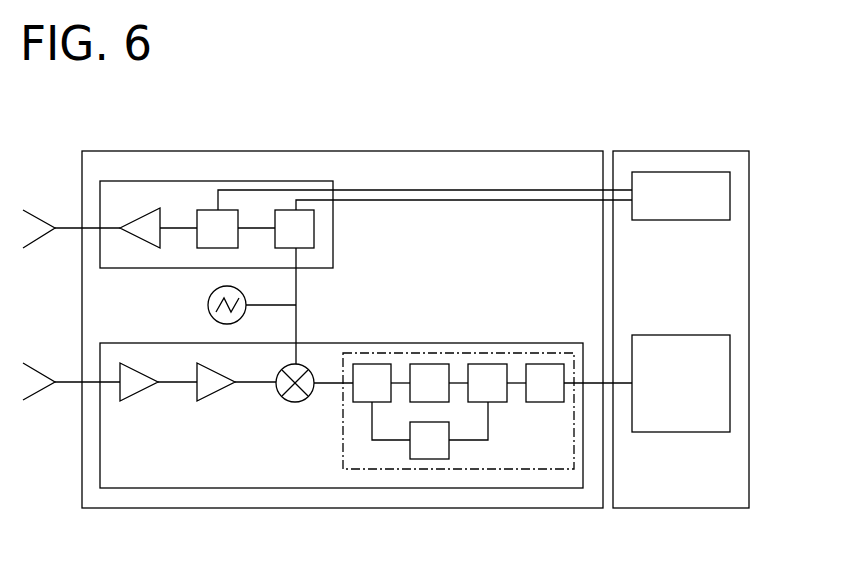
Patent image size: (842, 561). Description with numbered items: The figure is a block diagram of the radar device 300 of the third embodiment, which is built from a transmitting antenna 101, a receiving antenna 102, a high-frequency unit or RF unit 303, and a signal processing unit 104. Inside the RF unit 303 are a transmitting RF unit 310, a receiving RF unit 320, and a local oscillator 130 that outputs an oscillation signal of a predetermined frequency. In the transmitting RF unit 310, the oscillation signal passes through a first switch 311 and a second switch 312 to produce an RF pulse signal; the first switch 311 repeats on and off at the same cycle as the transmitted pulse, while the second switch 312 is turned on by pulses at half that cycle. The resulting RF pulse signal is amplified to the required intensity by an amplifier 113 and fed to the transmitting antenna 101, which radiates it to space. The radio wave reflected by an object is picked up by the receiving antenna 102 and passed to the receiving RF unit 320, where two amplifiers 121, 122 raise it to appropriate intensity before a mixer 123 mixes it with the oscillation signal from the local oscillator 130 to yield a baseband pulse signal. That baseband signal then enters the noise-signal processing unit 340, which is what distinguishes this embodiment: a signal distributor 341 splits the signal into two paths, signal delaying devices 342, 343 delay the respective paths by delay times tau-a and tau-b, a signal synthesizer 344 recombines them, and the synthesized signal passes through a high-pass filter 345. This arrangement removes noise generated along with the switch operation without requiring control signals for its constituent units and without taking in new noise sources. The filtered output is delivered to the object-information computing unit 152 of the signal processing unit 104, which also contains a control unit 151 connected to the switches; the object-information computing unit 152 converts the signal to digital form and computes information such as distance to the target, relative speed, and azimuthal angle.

The radar device 300 is at (262, 112).
The high-frequency unit (RF unit) 303 is at (190, 151).
The signal processing unit 104 is at (678, 151).
The transmitting RF unit 310 is at (296, 181).
The receiving RF unit 320 is at (210, 488).
The transmitting antenna 101 is at (42, 220).
The receiving antenna 102 is at (42, 374).
The amplifier 113 is at (137, 238).
The second switch 312 is at (195, 240).
The first switch 311 is at (314, 228).
The local oscillator 130 is at (208, 305).
The amplifier 121 is at (143, 390).
The amplifier 122 is at (220, 390).
The mixer 123 is at (295, 402).
The noise-signal processing unit 340 is at (362, 469).
The signal distributor 341 is at (372, 364).
The signal delaying device 342 is at (430, 364).
The signal delaying device 343 is at (428, 459).
The signal synthesizer 344 is at (488, 364).
The high-pass filter 345 is at (547, 364).
The control unit 151 is at (730, 190).
The object-information computing unit 152 is at (730, 378).